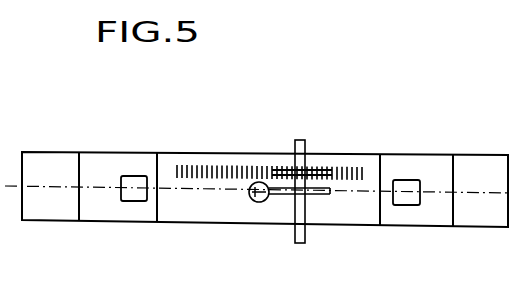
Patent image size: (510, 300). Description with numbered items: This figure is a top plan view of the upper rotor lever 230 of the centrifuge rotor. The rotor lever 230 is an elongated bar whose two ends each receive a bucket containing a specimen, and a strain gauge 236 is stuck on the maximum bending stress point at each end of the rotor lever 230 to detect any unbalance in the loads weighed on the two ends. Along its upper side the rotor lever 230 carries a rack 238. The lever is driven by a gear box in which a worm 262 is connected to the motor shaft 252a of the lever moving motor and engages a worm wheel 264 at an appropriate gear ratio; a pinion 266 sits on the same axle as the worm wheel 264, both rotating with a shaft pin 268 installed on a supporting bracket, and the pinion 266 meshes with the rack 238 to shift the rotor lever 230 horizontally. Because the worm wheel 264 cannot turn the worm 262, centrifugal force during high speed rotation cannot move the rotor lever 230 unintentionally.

The rotor lever 230 is at (327, 147).
The strain gauge 236 is at (134, 176).
The rack 238 is at (240, 167).
The motor shaft 252a is at (246, 200).
The worm 262 is at (266, 201).
The worm wheel 264 is at (330, 194).
The pinion 266 is at (281, 182).
The shaft pin 268 is at (302, 243).